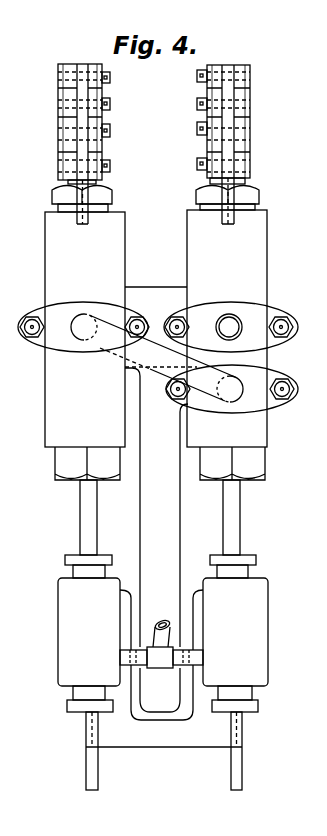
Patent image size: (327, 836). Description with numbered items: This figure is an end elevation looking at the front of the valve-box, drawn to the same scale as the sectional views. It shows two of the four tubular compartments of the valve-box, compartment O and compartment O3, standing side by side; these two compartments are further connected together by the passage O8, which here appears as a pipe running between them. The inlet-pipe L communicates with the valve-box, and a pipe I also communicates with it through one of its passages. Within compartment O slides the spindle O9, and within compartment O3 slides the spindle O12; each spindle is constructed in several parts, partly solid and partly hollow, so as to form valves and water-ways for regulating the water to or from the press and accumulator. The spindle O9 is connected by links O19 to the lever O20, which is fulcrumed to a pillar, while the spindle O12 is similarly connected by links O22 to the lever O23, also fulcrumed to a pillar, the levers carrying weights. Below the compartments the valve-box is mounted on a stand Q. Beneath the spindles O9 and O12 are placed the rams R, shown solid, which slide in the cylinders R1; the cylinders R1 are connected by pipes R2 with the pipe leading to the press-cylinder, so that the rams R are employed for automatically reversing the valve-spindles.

The compartment O is at (227, 328).
The compartment O3 is at (85, 329).
The passage O8 is at (157, 358).
The spindle O9 is at (252, 181).
The spindle O12 is at (100, 183).
The links O19 is at (268, 142).
The lever O20 is at (230, 64).
The links O22 is at (112, 144).
The lever O23 is at (80, 64).
The inlet-pipe L is at (232, 316).
The stand Q is at (161, 544).
The rams R is at (80, 511).
The cylinders R1 is at (163, 633).
The pipes R2 is at (208, 642).
The pipe I is at (7, 162).